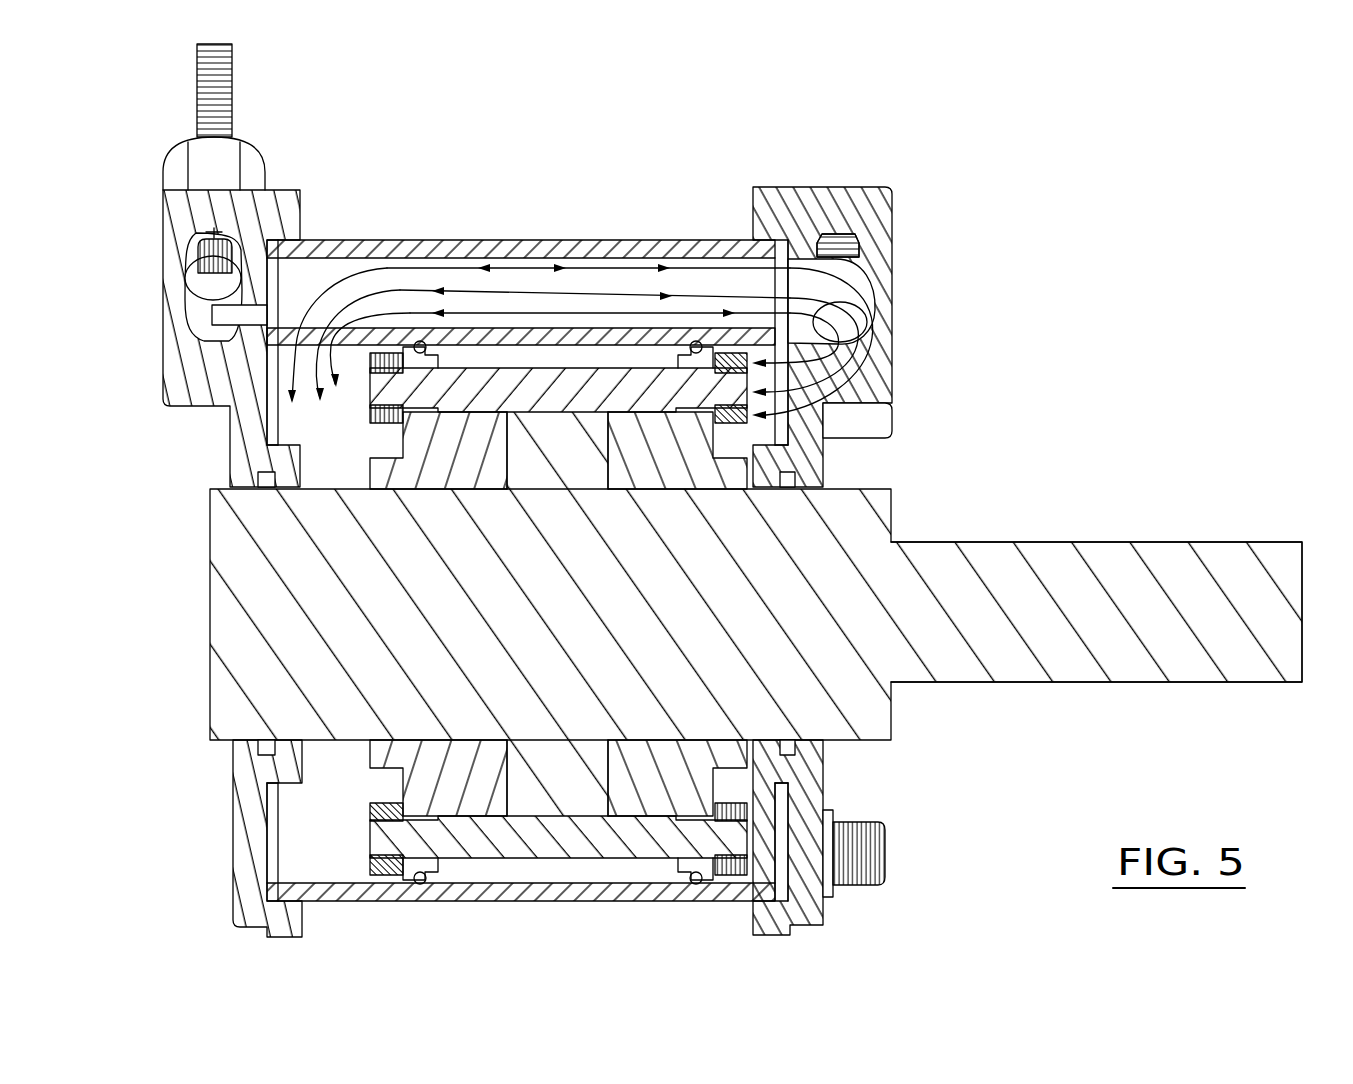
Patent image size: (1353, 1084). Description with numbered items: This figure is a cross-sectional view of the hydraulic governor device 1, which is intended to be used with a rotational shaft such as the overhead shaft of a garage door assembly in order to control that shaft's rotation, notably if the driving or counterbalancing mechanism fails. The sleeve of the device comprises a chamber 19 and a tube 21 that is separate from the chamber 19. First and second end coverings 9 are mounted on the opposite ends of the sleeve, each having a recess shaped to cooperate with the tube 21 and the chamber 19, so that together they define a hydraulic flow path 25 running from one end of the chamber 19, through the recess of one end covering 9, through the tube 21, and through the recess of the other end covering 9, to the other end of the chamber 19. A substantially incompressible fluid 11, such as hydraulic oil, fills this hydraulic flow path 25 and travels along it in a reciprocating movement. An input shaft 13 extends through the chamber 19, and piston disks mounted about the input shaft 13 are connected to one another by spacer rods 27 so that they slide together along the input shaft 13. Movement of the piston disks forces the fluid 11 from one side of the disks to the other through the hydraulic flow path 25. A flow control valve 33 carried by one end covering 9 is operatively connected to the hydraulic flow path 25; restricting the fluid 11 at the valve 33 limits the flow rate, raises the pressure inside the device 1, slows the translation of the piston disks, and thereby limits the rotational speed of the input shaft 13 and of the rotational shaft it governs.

The hydraulic governor device 1 is at (848, 132).
The end coverings 9 is at (872, 207).
The fluid 11 is at (313, 289).
The input shaft 13 is at (1081, 668).
The chamber 19 is at (358, 803).
The tube 21 is at (340, 268).
The hydraulic flow path 25 is at (498, 288).
The spacer rods 27 is at (564, 858).
The flow control valve 33 is at (242, 48).